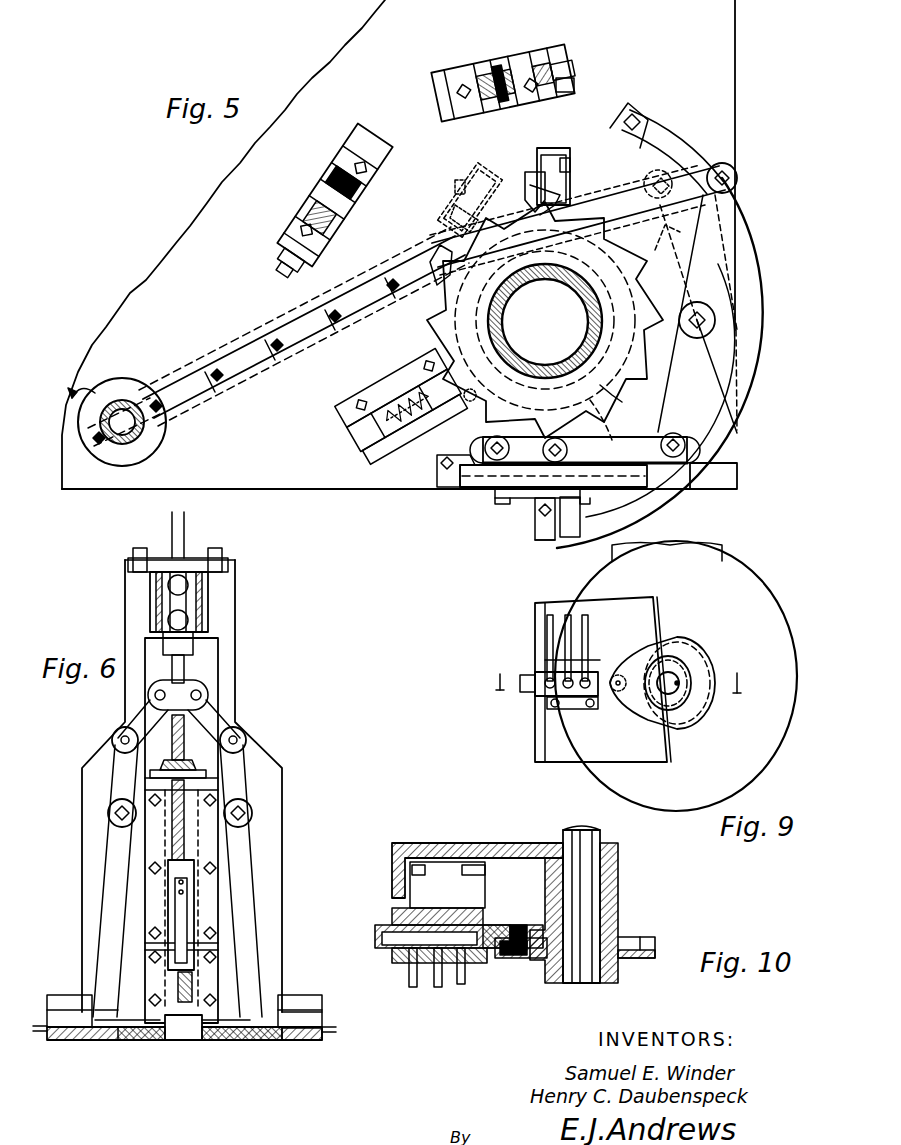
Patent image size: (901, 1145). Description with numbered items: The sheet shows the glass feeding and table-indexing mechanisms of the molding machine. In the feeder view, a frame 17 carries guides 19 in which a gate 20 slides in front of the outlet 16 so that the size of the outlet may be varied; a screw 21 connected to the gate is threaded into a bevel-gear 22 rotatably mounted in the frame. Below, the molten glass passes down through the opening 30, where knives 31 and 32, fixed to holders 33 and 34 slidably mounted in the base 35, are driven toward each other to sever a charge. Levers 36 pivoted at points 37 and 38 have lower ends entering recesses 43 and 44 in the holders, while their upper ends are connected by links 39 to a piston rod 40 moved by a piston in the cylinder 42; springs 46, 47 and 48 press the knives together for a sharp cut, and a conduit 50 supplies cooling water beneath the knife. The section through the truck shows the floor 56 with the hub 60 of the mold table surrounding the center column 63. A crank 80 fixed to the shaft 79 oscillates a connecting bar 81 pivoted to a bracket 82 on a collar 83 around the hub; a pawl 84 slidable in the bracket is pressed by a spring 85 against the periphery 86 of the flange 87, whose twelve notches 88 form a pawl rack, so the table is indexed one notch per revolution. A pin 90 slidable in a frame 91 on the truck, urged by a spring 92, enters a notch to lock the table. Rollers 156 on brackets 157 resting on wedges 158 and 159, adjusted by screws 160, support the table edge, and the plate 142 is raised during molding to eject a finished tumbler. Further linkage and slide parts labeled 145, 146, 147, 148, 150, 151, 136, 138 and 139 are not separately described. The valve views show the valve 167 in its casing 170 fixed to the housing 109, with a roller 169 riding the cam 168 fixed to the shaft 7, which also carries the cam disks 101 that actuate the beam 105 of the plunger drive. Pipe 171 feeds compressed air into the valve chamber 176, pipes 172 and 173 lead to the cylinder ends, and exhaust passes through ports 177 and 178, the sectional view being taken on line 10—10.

In FIG. 5, the floor 56 is at (345, 489).
In FIG. 5, the shaft 79 is at (140, 430).
In FIG. 5, the crank 80 is at (112, 392).
In FIG. 5, the connecting bar 81 is at (180, 398).
In FIG. 5, the link arm 145 is at (602, 176).
In FIG. 5, the pivot bolt 146 is at (735, 190).
In FIG. 5, the arcuate segment 151 is at (655, 140).
In FIG. 5, the bracket 150 is at (568, 532).
In FIG. 5, the pivot 147 is at (705, 318).
In FIG. 5, the hub 60 is at (540, 398).
In FIG. 5, the center column 63 is at (490, 332).
In FIG. 5, the notches 88 is at (435, 285).
In FIG. 5, the collar 83 is at (475, 386).
In FIG. 5, the periphery 86 is at (648, 247).
In FIG. 5, the flange 87 is at (625, 405).
In FIG. 5, the lever 148 is at (612, 425).
In FIG. 5, the pin 90 is at (362, 420).
In FIG. 5, the frame 91 is at (355, 393).
In FIG. 5, the spring 92 is at (412, 420).
In FIG. 5, the rollers 156 is at (482, 60).
In FIG. 5, the brackets 157 is at (500, 62).
In FIG. 5, the wedge 158 is at (530, 58).
In FIG. 5, the wedge 159 is at (446, 118).
In FIG. 5, the screws 160 is at (562, 98).
In FIG. 5, the pawl 84 is at (555, 157).
In FIG. 5, the bracket 82 is at (570, 157).
In FIG. 5, the spring 85 is at (525, 182).
In FIG. 5, the slide bar 139 is at (450, 489).
In FIG. 5, the guide plate 136 is at (495, 498).
In FIG. 5, the block 138 is at (535, 505).
In FIG. 5, the plate 142 is at (548, 540).
In FIG. 6, the frame 17 is at (232, 645).
In FIG. 6, the cylinder 42 is at (208, 590).
In FIG. 6, the piston rod 40 is at (172, 672).
In FIG. 6, the links 39 is at (142, 708).
In FIG. 6, the screw 21 is at (112, 732).
In FIG. 6, the bevel-gear 22 is at (200, 750).
In FIG. 6, the levers 36 is at (108, 862).
In FIG. 6, the pivot point 37 is at (107, 812).
In FIG. 6, the pivot point 38 is at (253, 810).
In FIG. 6, the guides 19 is at (215, 903).
In FIG. 6, the gate 20 is at (190, 955).
In FIG. 6, the outlet 16 is at (192, 985).
In FIG. 6, the holder 33 is at (58, 1041).
In FIG. 6, the recess 44 is at (288, 1042).
In FIG. 6, the opening 30 is at (183, 1040).
In FIG. 6, the knife 31 is at (142, 1042).
In FIG. 6, the knife 32 is at (222, 1042).
In FIG. 6, the holder 34 is at (252, 1042).
In FIG. 6, the spring 47 is at (88, 1042).
In FIG. 6, the spring 46 is at (80, 1008).
In FIG. 6, the spring 48 is at (282, 1002).
In FIG. 6, the base 35 is at (318, 997).
In FIG. 6, the conduit 50 is at (38, 1032).
In FIG. 6, the recess 43 is at (115, 1020).
In FIG. 9, the cam disks 101 is at (752, 590).
In FIG. 9, the beam 105 is at (722, 553).
In FIG. 9, the cam 168 is at (685, 650).
In FIG. 10, the cam 168 is at (632, 938).
In FIG. 9, the housing 109 is at (555, 752).
In FIG. 10, the housing 109 is at (498, 833).
In FIG. 9, the valve 167 is at (527, 698).
In FIG. 10, the valve 167 is at (492, 925).
In FIG. 9, the valve casing 170 is at (572, 710).
In FIG. 10, the valve casing 170 is at (470, 908).
In FIG. 9, the pipe 173 is at (540, 625).
In FIG. 10, the pipe 173 is at (413, 988).
In FIG. 9, the pipe 171 is at (560, 630).
In FIG. 10, the pipe 171 is at (438, 988).
In FIG. 9, the pipe 172 is at (590, 630).
In FIG. 10, the pipe 172 is at (464, 982).
In FIG. 9, the section line 10 is at (620, 687).
In FIG. 10, the shaft 7 is at (590, 860).
In FIG. 10, the roller 169 is at (538, 930).
In FIG. 10, the valve chamber 176 is at (425, 930).
In FIG. 10, the exhaust port 177 is at (508, 958).
In FIG. 10, the port 178 is at (395, 962).